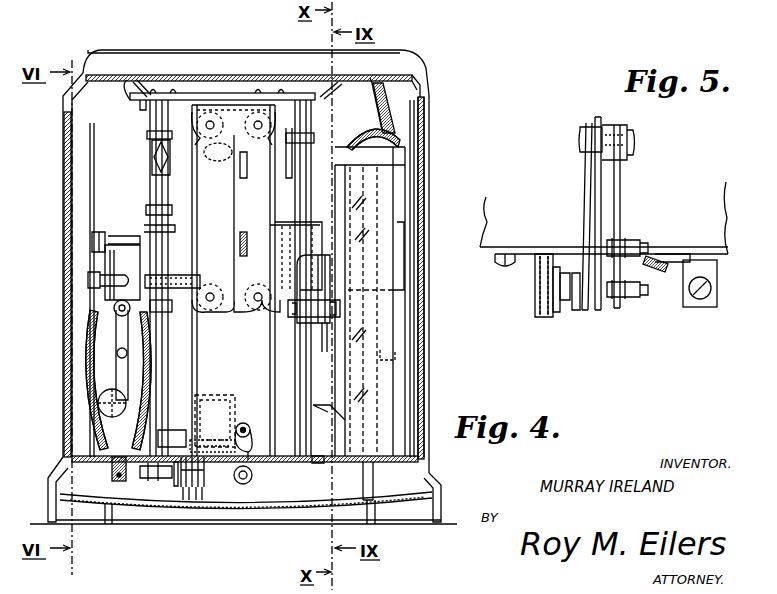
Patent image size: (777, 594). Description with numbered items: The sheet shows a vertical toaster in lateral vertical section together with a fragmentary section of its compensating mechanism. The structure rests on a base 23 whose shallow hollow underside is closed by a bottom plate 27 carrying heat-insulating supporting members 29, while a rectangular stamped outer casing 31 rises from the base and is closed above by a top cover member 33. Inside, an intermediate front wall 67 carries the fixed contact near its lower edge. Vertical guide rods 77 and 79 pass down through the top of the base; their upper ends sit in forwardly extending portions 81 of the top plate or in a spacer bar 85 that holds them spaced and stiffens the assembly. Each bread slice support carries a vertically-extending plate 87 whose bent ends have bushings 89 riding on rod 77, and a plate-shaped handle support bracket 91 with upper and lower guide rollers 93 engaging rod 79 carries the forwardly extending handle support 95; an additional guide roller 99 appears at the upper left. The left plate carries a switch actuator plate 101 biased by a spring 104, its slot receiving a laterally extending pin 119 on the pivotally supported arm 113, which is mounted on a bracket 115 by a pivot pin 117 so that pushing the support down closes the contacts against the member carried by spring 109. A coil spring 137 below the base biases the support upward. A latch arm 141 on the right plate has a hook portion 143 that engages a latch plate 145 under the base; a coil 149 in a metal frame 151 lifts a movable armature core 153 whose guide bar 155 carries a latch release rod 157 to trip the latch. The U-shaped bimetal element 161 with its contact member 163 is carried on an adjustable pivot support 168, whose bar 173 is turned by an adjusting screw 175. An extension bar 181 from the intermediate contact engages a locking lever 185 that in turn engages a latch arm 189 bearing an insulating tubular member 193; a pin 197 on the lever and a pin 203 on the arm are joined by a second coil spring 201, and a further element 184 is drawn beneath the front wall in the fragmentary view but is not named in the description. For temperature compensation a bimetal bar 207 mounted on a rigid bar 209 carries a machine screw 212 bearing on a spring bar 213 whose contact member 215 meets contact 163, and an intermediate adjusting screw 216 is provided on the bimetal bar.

In FIG. 4, the base 23 is at (62, 470).
In FIG. 4, the bottom plate 27 is at (255, 508).
In FIG. 4, the supporting members 29 is at (90, 518).
In FIG. 4, the outer casing 31 is at (63, 230).
In FIG. 4, the top cover member 33 is at (232, 58).
In FIG. 5, the intermediate front wall 67 is at (728, 212).
In FIG. 4, the guide rod 77 is at (163, 194).
In FIG. 4, the guide rod 79 is at (192, 205).
In FIG. 4, the forwardly extending portions of the top plate 81 is at (140, 86).
In FIG. 4, the spacer bar 85 is at (240, 93).
In FIG. 4, the vertically-extending plate 87 is at (148, 213).
In FIG. 4, the bushing 89 is at (151, 136).
In FIG. 4, the handle support bracket 91 is at (231, 312).
In FIG. 4, the guide roller 93 is at (236, 140).
In FIG. 4, the handle support 95 is at (255, 255).
In FIG. 4, the additional guide roller 99 is at (160, 159).
In FIG. 4, the switch actuator plate 101 is at (144, 108).
In FIG. 4, the spring 104 is at (142, 222).
In FIG. 4, the spring 109 is at (100, 377).
In FIG. 4, the pivotally supported arm 113 is at (125, 318).
In FIG. 4, the bracket 115 is at (135, 266).
In FIG. 4, the pivot pin 117 is at (130, 283).
In FIG. 4, the laterally extending pin 119 is at (160, 242).
In FIG. 4, the coil spring 137 is at (252, 475).
In FIG. 4, the latch arm 141 is at (325, 268).
In FIG. 4, the hook portion 143 is at (325, 348).
In FIG. 4, the latch plate 145 is at (318, 464).
In FIG. 4, the coil 149 is at (402, 252).
In FIG. 4, the metal frame 151 is at (390, 322).
In FIG. 4, the movable armature core 153 is at (400, 355).
In FIG. 4, the guide bar 155 is at (373, 477).
In FIG. 4, the latch release rod 157 is at (335, 415).
In FIG. 4, the bimetal element 161 is at (186, 502).
In FIG. 5, the bimetal element 161 is at (556, 312).
In FIG. 5, the contact member 163 is at (563, 313).
In FIG. 4, the adjustable pivot support 168 is at (203, 502).
In FIG. 4, the bar 173 is at (250, 448).
In FIG. 4, the adjusting screw 175 is at (248, 426).
In FIG. 4, the extension bar 181 is at (118, 466).
In FIG. 5, the extension bar 181 is at (688, 306).
In FIG. 5, the fitting 184 is at (530, 262).
In FIG. 4, the locking lever 185 is at (152, 480).
In FIG. 5, the locking lever 185 is at (686, 256).
In FIG. 4, the latch arm 189 is at (205, 470).
In FIG. 5, the tubular member 193 is at (538, 290).
In FIG. 4, the pin 197 is at (195, 441).
In FIG. 4, the second coil spring 201 is at (212, 420).
In FIG. 4, the pin 203 is at (216, 420).
In FIG. 5, the bimetal bar 207 is at (621, 192).
In FIG. 5, the rigid bar 209 is at (597, 184).
In FIG. 4, the machine screw 212 is at (164, 480).
In FIG. 5, the machine screw 212 is at (632, 300).
In FIG. 5, the spring bar 213 is at (588, 214).
In FIG. 5, the contact member 215 is at (578, 312).
In FIG. 5, the intermediate adjusting screw 216 is at (646, 246).